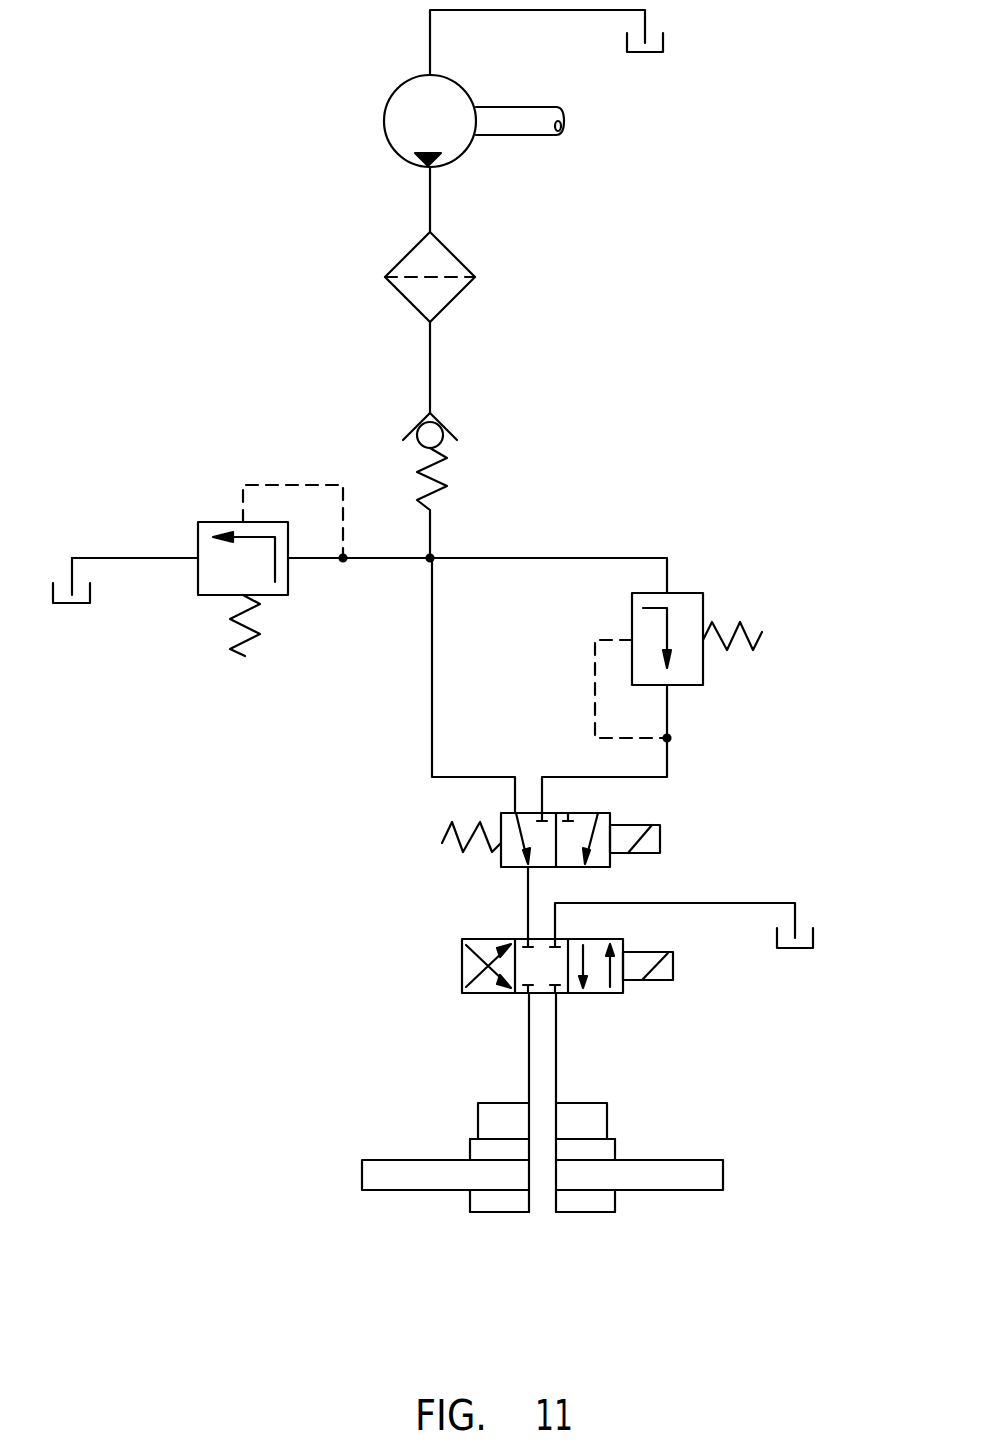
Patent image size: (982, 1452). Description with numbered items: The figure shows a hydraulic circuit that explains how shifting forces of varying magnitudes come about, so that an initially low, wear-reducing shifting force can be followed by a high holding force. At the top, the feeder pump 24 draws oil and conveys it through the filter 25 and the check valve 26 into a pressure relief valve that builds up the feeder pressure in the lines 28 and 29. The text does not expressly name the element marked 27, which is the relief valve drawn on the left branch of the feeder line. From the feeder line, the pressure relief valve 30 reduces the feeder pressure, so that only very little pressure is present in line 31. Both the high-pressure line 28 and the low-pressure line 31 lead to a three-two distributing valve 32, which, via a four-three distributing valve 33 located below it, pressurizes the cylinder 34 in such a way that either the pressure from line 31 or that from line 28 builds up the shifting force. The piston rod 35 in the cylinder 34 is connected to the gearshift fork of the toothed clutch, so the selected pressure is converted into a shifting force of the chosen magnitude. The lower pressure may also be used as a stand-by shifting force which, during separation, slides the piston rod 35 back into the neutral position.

The feeder pump 24 is at (455, 142).
The filter 25 is at (445, 297).
The check valve 26 is at (440, 447).
The pressure relief valve 27 is at (275, 587).
The line 28 is at (432, 718).
The line 29 is at (618, 558).
The pressure relief valve 30 is at (688, 677).
The line 31 is at (670, 753).
The 3/2-distributing valve 32 is at (602, 855).
The 4/3-distributing valve 33 is at (615, 988).
The cylinder 34 is at (598, 1207).
The piston rod 35 is at (428, 1183).